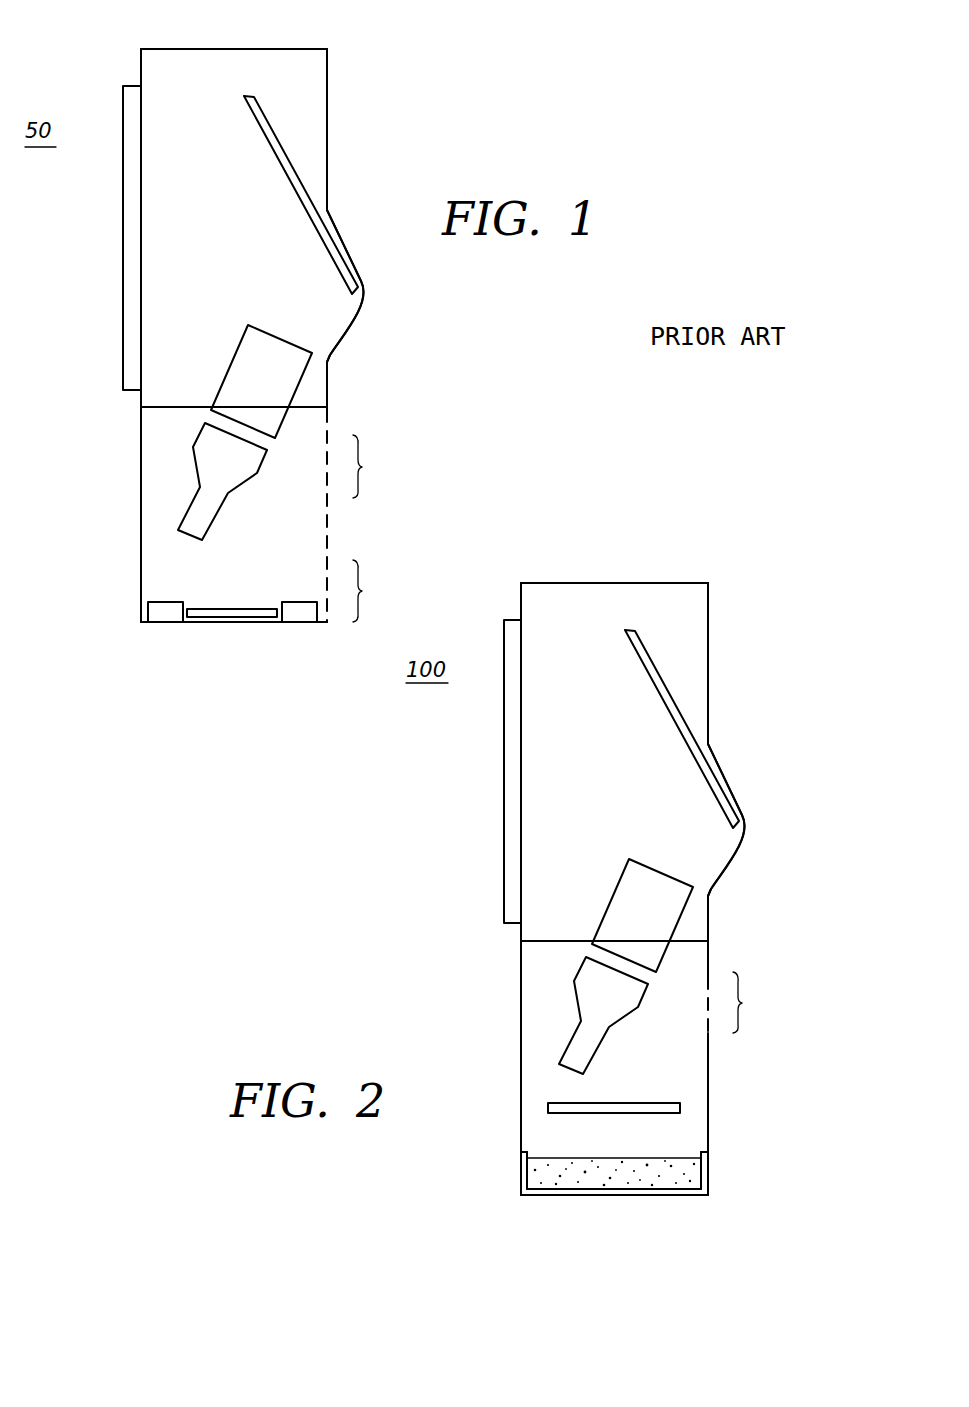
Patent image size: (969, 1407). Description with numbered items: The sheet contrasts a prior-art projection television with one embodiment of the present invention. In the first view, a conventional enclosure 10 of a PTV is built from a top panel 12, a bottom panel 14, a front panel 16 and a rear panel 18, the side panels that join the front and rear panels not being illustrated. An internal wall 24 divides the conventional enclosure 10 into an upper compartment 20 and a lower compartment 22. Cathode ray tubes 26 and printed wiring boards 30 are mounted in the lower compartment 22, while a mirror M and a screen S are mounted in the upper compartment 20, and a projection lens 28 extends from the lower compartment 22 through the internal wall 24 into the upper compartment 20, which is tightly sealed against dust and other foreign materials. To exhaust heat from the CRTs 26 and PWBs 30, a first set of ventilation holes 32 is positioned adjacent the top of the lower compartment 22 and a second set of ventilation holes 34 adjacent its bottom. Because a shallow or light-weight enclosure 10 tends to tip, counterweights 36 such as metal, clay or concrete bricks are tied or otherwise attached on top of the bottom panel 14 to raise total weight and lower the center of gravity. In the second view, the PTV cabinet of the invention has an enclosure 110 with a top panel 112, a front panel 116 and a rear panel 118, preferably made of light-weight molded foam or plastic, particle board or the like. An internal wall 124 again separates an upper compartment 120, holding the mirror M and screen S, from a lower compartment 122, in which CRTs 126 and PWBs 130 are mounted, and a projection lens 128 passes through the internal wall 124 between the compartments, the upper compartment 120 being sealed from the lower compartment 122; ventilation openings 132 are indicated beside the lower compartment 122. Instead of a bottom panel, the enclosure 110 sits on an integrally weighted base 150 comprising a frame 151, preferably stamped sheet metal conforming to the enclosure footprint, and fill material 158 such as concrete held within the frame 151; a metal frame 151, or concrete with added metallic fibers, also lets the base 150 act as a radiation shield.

In FIG. 1, the conventional enclosure 10 is at (338, 122).
In FIG. 1, the top panel 12 is at (252, 49).
In FIG. 1, the bottom panel 14 is at (207, 623).
In FIG. 1, the front panel 16 is at (140, 492).
In FIG. 1, the rear panel 18 is at (357, 328).
In FIG. 1, the upper compartment 20 is at (188, 63).
In FIG. 1, the lower compartment 22 is at (162, 443).
In FIG. 1, the internal wall 24 is at (175, 405).
In FIG. 1, the cathode ray tubes 26 is at (225, 480).
In FIG. 1, the projection lens 28 is at (273, 348).
In FIG. 1, the printed wiring boards 30 is at (223, 605).
In FIG. 1, the first set of ventilation holes 32 is at (371, 466).
In FIG. 1, the second set of ventilation holes 34 is at (371, 591).
In FIG. 1, the counterweights 36 is at (298, 607).
In FIG. 1, the screen S is at (123, 255).
In FIG. 2, the screen S is at (504, 788).
In FIG. 1, the mirror M is at (270, 146).
In FIG. 2, the mirror M is at (650, 678).
In FIG. 2, the enclosure 110 is at (722, 657).
In FIG. 2, the top panel 112 is at (635, 582).
In FIG. 2, the front panel 116 is at (520, 1025).
In FIG. 2, the rear panel 118 is at (737, 862).
In FIG. 2, the upper compartment 120 is at (570, 597).
In FIG. 2, the lower compartment 122 is at (542, 978).
In FIG. 2, the internal wall 124 is at (555, 939).
In FIG. 2, the CRTs 126 is at (607, 1015).
In FIG. 2, the projection lens 128 is at (658, 883).
In FIG. 2, the PWBs 130 is at (680, 1108).
In FIG. 2, the cutting region 132 is at (759, 1002).
In FIG. 2, the integrally weighted base 150 is at (537, 1197).
In FIG. 2, the frame 151 is at (702, 1173).
In FIG. 2, the fill material 158 is at (530, 1177).